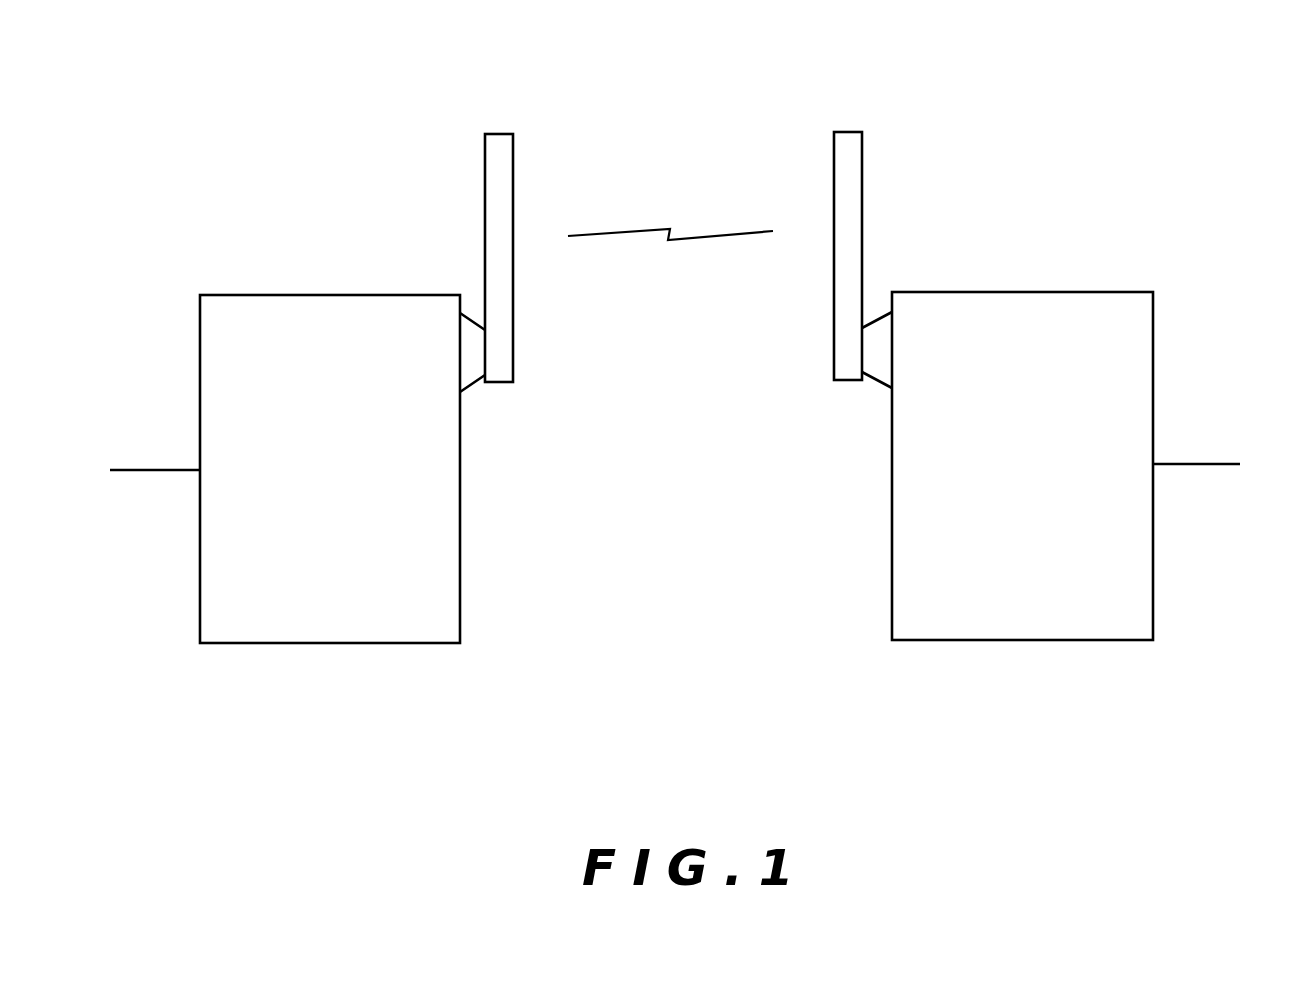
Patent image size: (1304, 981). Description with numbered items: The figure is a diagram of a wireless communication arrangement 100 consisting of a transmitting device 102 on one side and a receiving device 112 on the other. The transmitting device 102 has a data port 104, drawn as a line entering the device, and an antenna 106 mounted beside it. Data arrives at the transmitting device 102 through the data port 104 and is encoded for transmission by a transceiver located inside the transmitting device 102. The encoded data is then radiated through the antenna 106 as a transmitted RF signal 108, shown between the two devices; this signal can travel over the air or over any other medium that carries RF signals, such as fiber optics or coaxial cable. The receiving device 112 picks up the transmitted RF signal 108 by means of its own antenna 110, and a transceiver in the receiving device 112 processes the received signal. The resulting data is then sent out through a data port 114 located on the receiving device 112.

The wireless communication system 100 is at (701, 70).
The transmitting device 102 is at (332, 645).
The data port 104 is at (139, 470).
The antenna 106 is at (485, 172).
The transmitted RF signal 108 is at (697, 240).
The antenna 110 is at (862, 163).
The receiving device 112 is at (1018, 642).
The data port 114 is at (1214, 464).